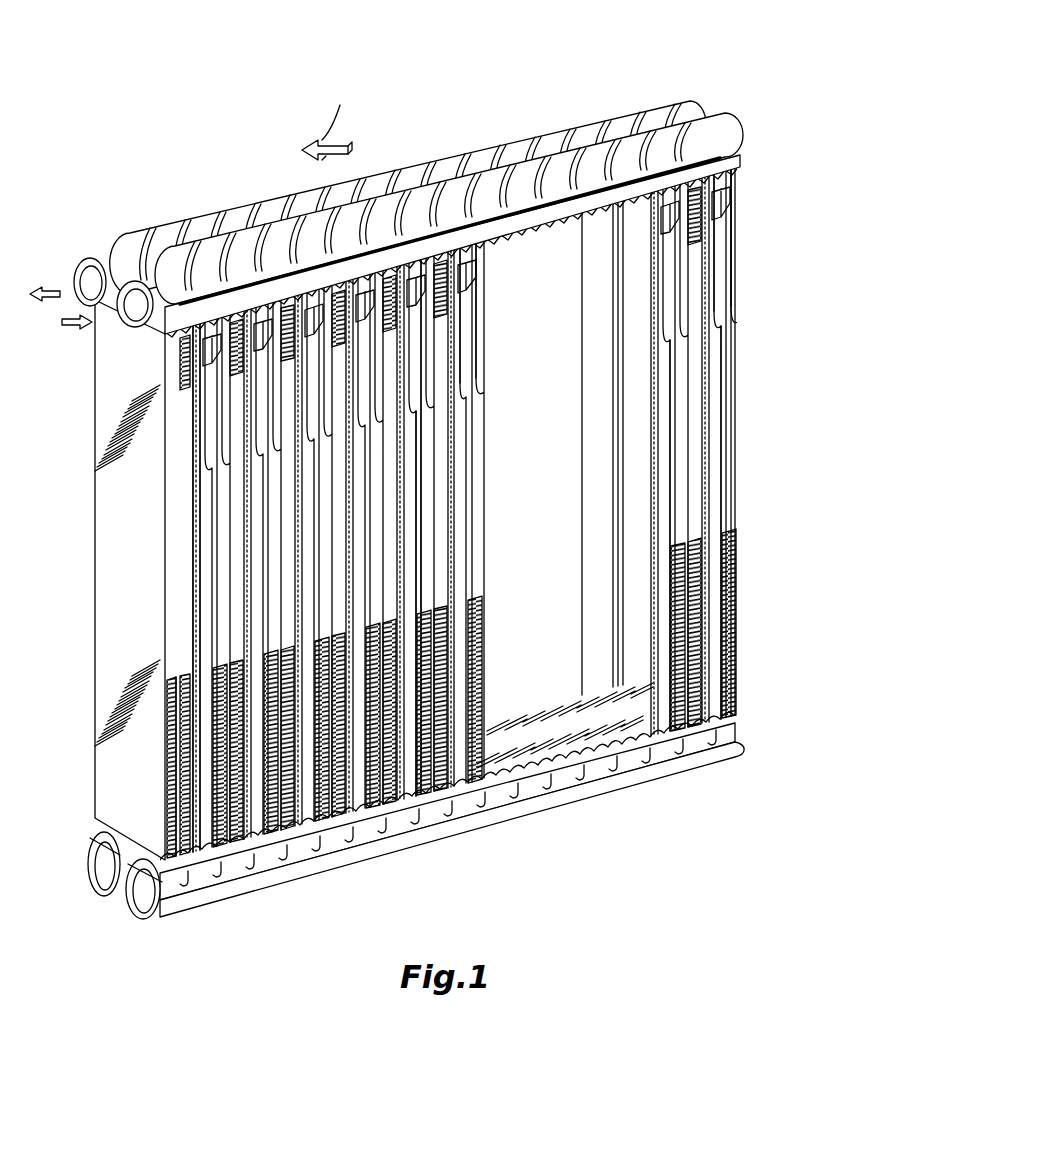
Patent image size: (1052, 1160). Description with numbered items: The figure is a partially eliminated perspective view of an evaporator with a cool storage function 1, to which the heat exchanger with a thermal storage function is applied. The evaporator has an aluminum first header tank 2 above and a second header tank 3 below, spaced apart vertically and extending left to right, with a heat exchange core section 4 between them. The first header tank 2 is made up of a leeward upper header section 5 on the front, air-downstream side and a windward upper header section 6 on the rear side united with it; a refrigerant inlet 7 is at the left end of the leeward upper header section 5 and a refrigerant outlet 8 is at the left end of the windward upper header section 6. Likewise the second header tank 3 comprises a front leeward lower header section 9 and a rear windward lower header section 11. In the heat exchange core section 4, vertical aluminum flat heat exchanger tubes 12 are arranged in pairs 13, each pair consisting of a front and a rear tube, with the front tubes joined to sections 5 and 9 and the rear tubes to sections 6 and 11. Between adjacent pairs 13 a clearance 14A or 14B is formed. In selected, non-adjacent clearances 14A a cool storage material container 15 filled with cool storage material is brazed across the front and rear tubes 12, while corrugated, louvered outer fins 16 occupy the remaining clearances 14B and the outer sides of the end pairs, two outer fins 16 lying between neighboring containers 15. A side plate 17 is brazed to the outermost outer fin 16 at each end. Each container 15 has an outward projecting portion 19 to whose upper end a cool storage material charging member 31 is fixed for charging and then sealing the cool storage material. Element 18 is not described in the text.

The evaporator with a cool storage function 1 is at (500, 97).
The first header tank 2 is at (398, 193).
The second header tank 3 is at (398, 855).
The heat exchange core section 4 is at (411, 513).
The leeward upper header section 5 is at (722, 128).
The windward upper header section 6 is at (677, 98).
The refrigerant inlet 7 is at (124, 318).
The refrigerant outlet 8 is at (86, 278).
The leeward lower header section 9 is at (138, 918).
The windward lower header section 11 is at (100, 893).
The flat heat exchanger tube 12 is at (626, 432).
The pair of heat exchanger tubes 13 is at (590, 352).
The clearance 14A is at (662, 421).
The clearance 14B is at (200, 540).
The cool storage material container 15 is at (663, 366).
The corrugated outer fin 16 is at (190, 686).
The side plate 17 is at (106, 788).
The tube body 18 is at (415, 566).
The outward projecting portion 19 is at (466, 310).
The cool storage material charging member 31 is at (735, 207).